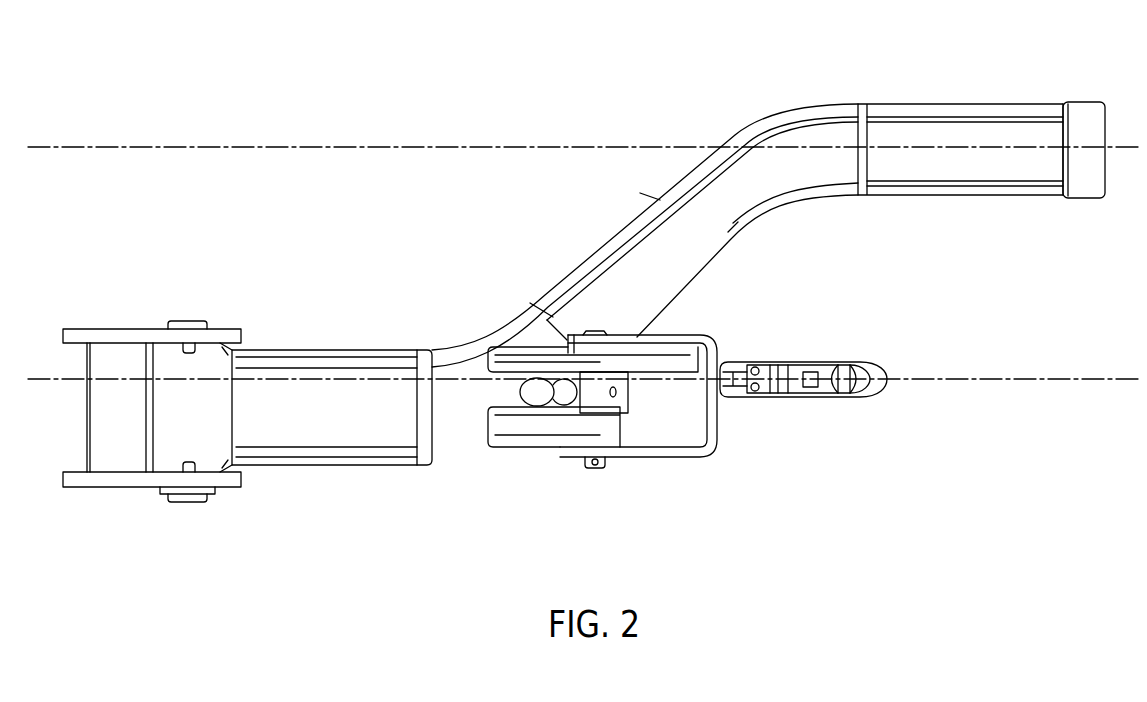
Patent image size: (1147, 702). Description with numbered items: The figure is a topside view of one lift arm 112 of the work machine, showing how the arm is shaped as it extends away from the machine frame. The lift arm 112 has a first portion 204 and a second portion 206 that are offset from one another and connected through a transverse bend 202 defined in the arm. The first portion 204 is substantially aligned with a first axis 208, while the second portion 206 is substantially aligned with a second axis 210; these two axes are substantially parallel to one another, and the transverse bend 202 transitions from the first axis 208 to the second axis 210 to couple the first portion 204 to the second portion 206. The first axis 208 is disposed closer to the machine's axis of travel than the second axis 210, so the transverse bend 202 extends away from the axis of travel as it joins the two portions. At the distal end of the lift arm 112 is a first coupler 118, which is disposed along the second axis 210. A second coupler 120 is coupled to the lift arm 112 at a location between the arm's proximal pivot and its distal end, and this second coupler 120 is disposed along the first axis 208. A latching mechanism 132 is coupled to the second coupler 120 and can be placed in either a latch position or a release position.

The lift arm 112 is at (305, 358).
The first coupler 118 is at (1088, 113).
The second coupler 120 is at (643, 452).
The latching mechanism 132 is at (788, 395).
The transverse bend 202 is at (573, 239).
The first portion 204 is at (317, 480).
The second portion 206 is at (957, 97).
The first axis 208 is at (1023, 378).
The second axis 210 is at (348, 150).